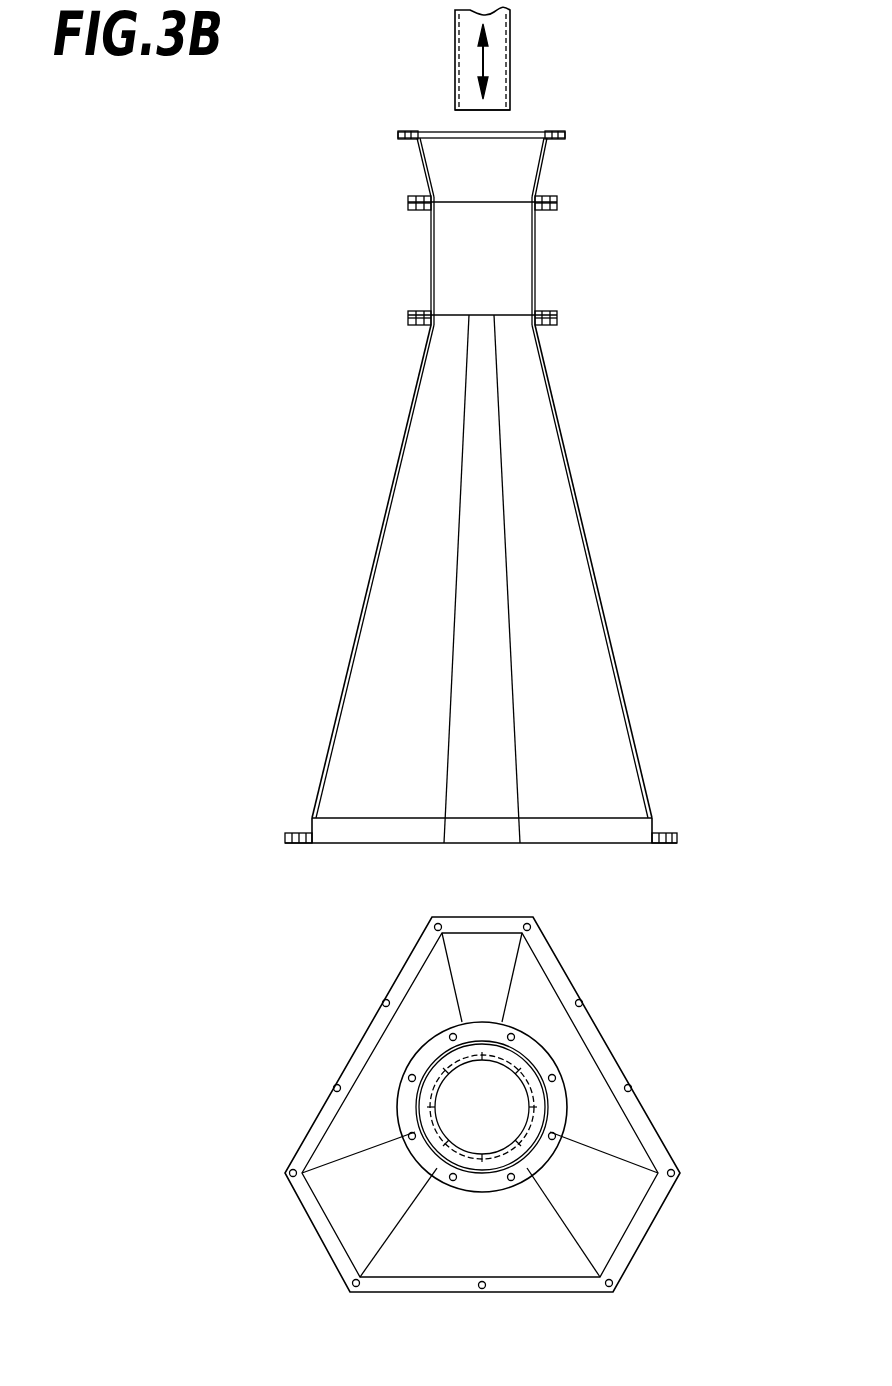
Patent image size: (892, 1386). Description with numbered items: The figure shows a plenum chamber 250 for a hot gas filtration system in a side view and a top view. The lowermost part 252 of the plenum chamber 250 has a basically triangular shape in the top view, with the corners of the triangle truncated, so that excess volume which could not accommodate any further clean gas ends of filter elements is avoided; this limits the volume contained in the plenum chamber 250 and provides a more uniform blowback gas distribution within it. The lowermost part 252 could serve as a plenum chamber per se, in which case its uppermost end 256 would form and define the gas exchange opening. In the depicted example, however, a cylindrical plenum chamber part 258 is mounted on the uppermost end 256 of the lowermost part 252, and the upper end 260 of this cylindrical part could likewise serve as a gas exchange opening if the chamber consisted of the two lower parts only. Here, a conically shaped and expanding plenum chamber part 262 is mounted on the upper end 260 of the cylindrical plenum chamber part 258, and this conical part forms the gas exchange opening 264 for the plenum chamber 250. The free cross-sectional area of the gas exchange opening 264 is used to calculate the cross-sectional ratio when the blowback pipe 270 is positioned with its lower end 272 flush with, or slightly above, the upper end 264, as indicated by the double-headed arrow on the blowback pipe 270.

The plenum chamber 250 is at (502, 646).
The lowermost plenum chamber part 252 is at (613, 643).
The uppermost end of the lowermost plenum chamber part 256 is at (507, 313).
The cylindrical plenum chamber part 258 is at (431, 247).
The upper end of the cylindrical plenum chamber part 260 is at (508, 207).
The conically shaped and expanding plenum chamber part 262 is at (541, 163).
The gas exchange opening 264 is at (525, 133).
The blowback pipe 270 is at (455, 47).
The lower end of the blowback pipe 272 is at (458, 113).